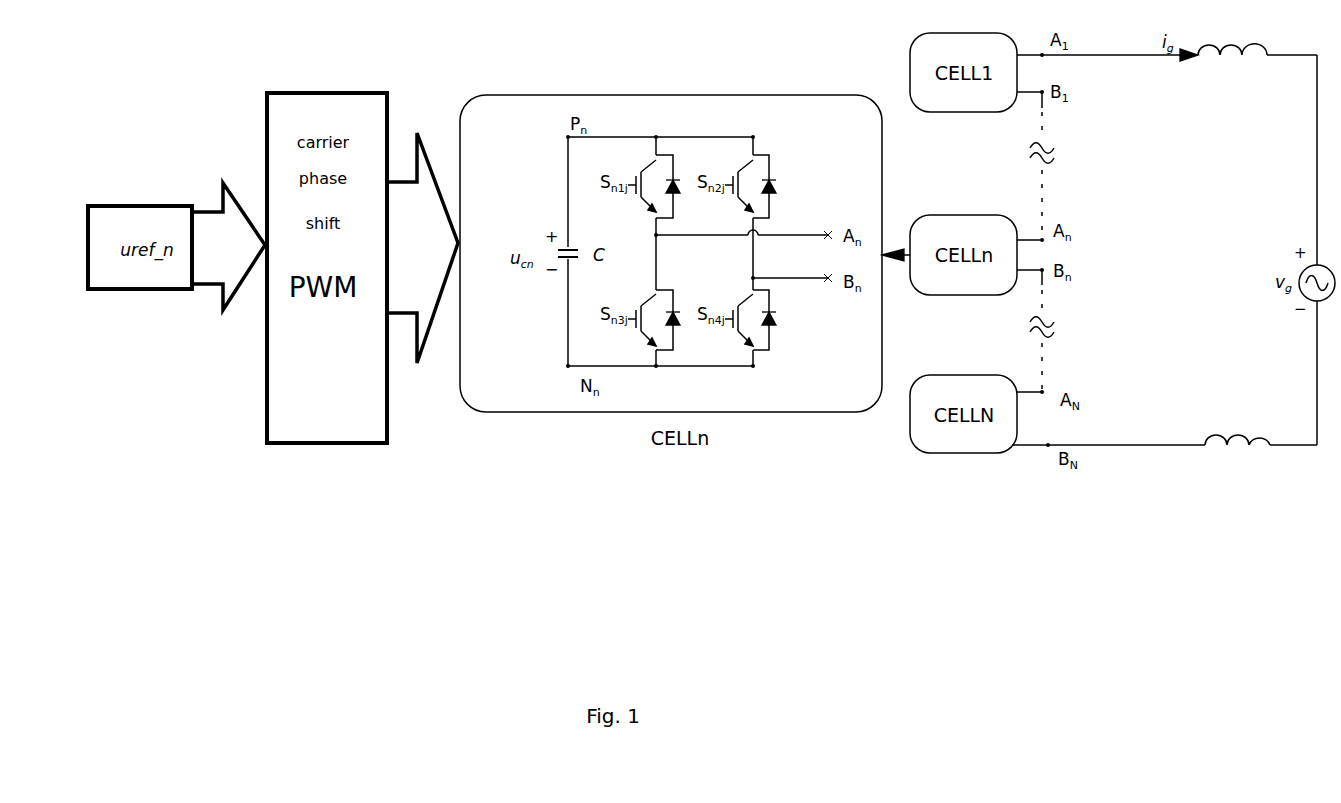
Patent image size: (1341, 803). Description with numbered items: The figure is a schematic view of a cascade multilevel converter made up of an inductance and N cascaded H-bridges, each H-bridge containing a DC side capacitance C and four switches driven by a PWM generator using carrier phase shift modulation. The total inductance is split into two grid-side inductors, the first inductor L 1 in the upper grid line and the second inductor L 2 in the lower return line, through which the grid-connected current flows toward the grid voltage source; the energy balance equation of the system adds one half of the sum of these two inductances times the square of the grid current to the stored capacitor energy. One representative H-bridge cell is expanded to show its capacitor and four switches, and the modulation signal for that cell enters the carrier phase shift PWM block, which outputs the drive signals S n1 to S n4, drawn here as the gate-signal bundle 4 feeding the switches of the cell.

The inductor L1 1 is at (1232, 37).
The inductor L2 2 is at (1237, 429).
The gate signals Sn1_4 from PWM 4 is at (422, 248).